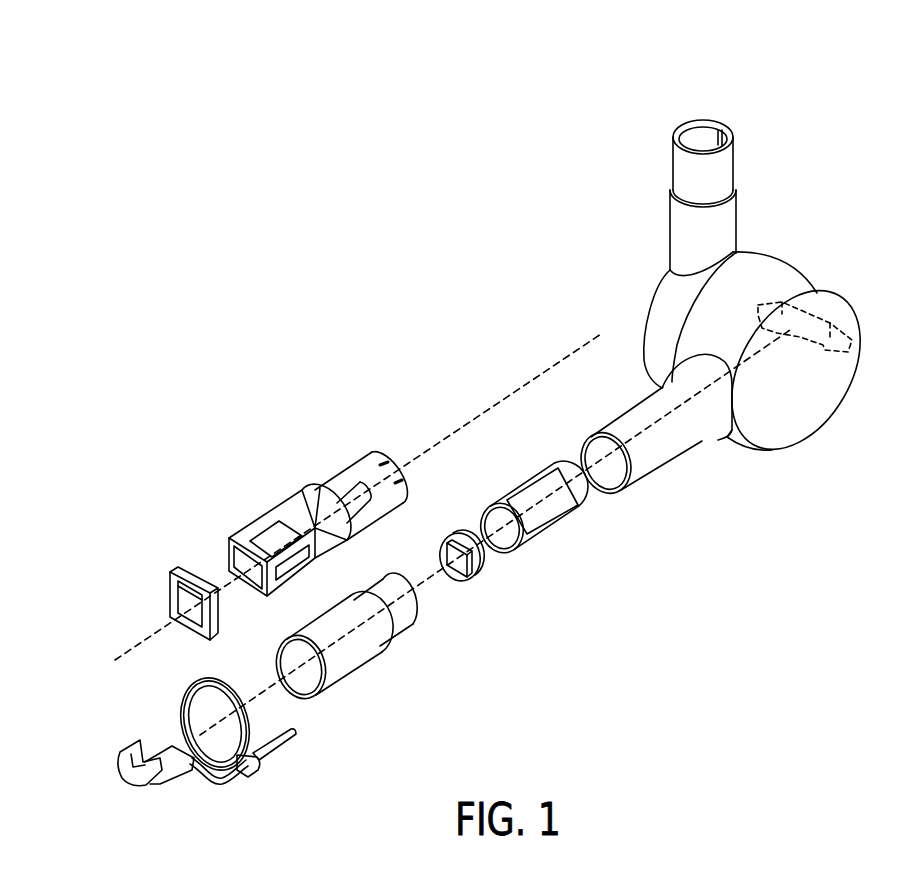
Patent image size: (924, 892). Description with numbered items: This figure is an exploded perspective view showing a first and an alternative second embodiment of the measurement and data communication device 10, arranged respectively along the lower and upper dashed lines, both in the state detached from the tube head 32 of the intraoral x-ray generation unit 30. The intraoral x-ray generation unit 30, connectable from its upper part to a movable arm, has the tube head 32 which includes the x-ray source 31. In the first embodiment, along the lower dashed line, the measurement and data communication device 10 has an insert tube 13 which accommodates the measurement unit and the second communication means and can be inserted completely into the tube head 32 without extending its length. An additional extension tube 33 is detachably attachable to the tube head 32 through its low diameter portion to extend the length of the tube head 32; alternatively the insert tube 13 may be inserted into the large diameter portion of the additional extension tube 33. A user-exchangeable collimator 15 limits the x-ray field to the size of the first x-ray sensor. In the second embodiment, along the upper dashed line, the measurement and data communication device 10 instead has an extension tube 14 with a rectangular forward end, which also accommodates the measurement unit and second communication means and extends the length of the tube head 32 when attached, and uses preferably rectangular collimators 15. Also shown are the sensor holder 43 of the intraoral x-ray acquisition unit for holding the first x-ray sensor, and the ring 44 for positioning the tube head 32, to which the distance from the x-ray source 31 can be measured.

The measurement and data communication device 10 is at (300, 460).
The insert tube 13 is at (542, 535).
The extension tube 14 is at (250, 530).
The collimator 15 is at (176, 574).
The intraoral x-ray generation unit 30 is at (828, 164).
The x-ray source 31 is at (823, 313).
The tube head 32 is at (658, 457).
The additional extension tube 33 is at (355, 663).
The sensor holder 43 is at (163, 804).
The ring 44 is at (183, 694).